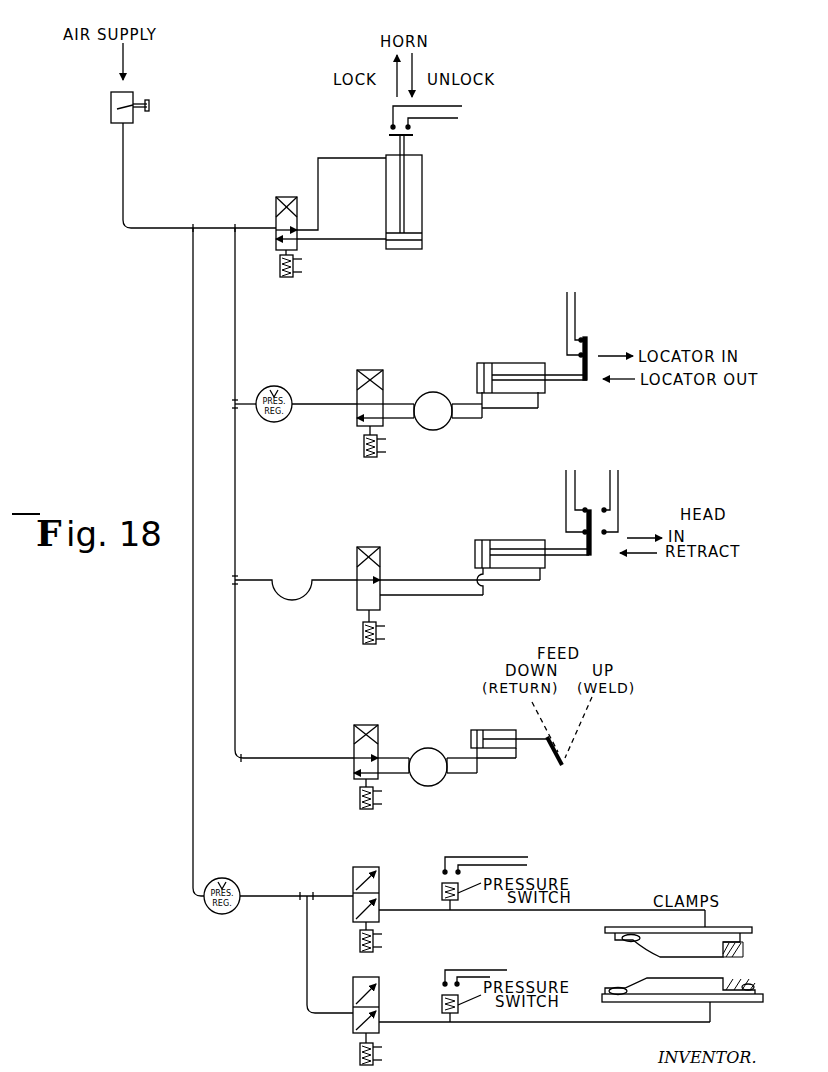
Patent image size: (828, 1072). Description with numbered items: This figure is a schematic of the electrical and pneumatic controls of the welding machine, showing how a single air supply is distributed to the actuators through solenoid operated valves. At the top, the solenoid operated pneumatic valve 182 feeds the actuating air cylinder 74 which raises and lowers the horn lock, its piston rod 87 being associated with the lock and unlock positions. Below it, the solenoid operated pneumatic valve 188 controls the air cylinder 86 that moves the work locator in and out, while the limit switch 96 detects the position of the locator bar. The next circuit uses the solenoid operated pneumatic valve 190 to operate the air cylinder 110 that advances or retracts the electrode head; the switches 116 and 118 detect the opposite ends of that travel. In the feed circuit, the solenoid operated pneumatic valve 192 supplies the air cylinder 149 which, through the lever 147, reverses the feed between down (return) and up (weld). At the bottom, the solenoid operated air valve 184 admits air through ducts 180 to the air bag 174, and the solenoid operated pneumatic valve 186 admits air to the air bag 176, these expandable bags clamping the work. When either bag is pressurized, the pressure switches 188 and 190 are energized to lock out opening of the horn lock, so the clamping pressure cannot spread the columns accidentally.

The actuating air cylinder 74 is at (413, 196).
The piston rod / lock limit switches 87 is at (413, 131).
The solenoid operated pneumatic valve 182 is at (276, 206).
The air cylinder 86 is at (545, 388).
The limit switch 96 is at (585, 337).
The pressure switch / solenoid operated pneumatic valve 188 is at (357, 412).
The air cylinder 110 is at (545, 563).
The switch 116 is at (585, 521).
The switch 118 is at (607, 526).
The pressure switch / solenoid operated pneumatic valve 190 is at (357, 592).
The air cylinder 149 is at (477, 730).
The lever 147 is at (547, 758).
The solenoid operated pneumatic valve 192 is at (354, 765).
The solenoid operated air valve 184 is at (353, 885).
The solenoid operated pneumatic valve 186 is at (353, 1018).
The ducts 180 is at (707, 923).
The air bag 174 is at (743, 950).
The air bag 176 is at (753, 981).